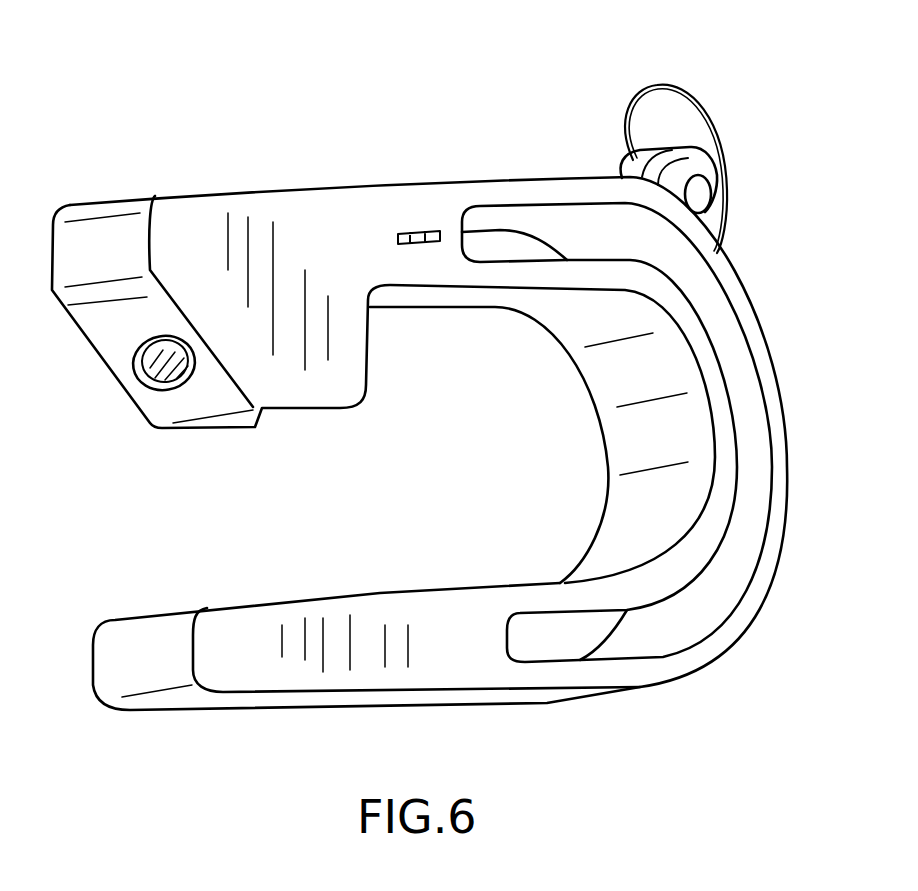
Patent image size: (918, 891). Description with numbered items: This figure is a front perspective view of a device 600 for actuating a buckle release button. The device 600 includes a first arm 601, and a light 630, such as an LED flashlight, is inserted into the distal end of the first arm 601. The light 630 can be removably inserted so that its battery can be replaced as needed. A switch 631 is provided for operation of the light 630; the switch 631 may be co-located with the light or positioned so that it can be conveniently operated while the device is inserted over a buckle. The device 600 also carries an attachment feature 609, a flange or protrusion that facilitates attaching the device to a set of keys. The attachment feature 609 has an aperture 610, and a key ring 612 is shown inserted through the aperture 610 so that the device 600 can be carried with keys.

The device 600 is at (150, 100).
The first arm 601 is at (322, 202).
The attachment feature 609 is at (632, 176).
The aperture 610 is at (702, 205).
The key ring 612 is at (668, 85).
The light 630 is at (137, 377).
The switch 631 is at (415, 232).